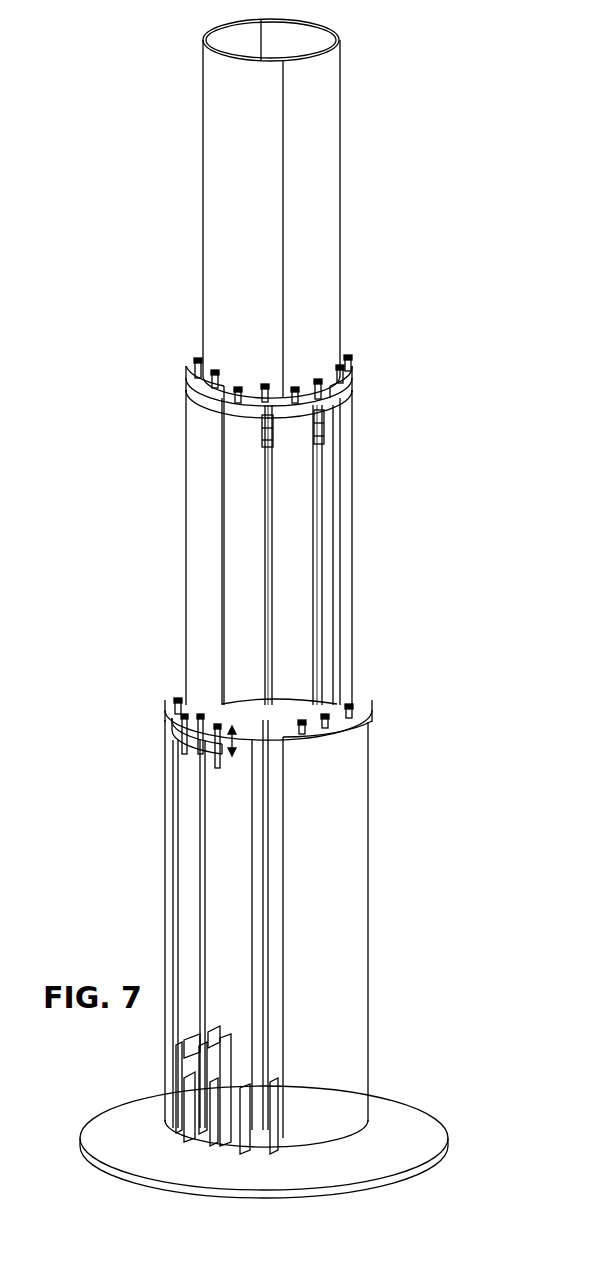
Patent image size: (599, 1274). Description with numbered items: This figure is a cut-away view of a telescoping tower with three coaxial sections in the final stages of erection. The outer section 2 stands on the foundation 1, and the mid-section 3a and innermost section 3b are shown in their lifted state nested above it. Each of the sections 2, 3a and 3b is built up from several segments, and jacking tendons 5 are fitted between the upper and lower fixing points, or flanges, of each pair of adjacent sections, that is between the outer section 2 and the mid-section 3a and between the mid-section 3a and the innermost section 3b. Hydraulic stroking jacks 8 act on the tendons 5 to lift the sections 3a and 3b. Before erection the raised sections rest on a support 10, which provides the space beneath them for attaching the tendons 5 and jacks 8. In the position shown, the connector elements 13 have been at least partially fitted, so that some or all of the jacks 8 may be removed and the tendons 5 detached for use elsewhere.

The foundation 1 is at (428, 1130).
The outer section 2 is at (358, 872).
The mid-section 3a is at (346, 542).
The innermost section 3b is at (325, 131).
The jacking tendons 5 is at (322, 505).
The hydraulic stroking jacks 8 is at (262, 438).
The support 10 is at (243, 1152).
The connector elements 13 is at (225, 408).